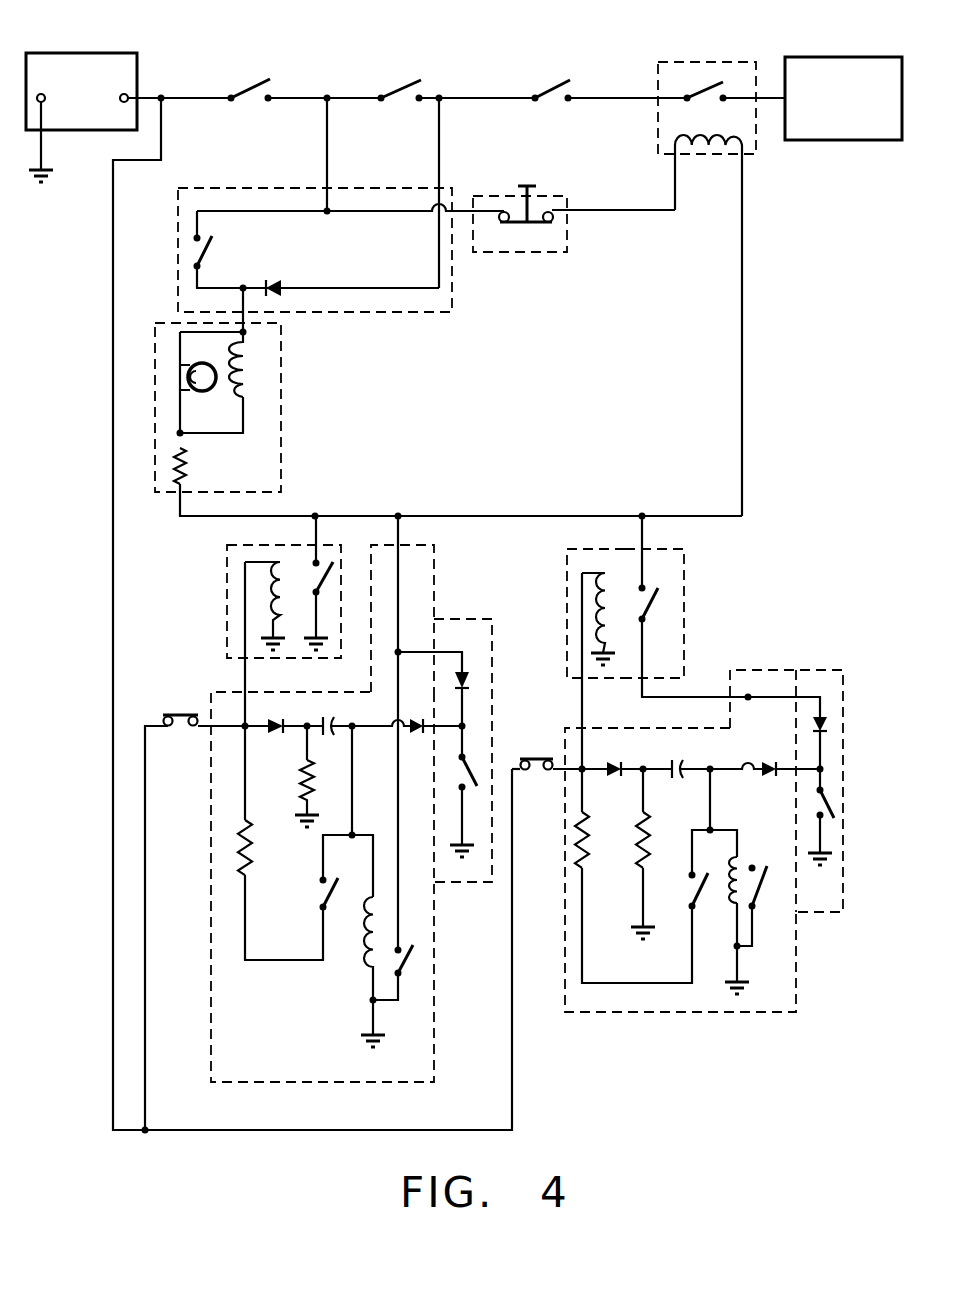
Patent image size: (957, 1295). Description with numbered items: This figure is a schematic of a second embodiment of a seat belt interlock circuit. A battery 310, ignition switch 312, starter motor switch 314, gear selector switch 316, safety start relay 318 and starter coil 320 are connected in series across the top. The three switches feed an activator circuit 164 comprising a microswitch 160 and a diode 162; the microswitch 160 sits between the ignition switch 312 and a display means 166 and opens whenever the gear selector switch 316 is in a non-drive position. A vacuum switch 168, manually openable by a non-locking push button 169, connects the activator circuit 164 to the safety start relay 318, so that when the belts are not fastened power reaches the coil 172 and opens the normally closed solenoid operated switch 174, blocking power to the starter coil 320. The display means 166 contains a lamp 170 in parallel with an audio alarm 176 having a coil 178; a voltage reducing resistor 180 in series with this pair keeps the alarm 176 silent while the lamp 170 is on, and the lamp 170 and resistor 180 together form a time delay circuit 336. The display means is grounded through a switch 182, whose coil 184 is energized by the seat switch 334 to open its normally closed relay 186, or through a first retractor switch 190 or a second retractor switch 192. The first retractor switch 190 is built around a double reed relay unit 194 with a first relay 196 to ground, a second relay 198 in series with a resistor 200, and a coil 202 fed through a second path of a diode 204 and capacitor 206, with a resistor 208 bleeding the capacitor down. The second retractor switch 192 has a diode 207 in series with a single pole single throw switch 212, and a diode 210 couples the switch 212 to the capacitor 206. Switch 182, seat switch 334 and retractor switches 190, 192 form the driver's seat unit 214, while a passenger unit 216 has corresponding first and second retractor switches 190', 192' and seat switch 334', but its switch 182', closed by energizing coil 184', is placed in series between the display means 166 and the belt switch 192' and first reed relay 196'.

The battery 310 is at (135, 80).
The ignition switch 312 is at (258, 78).
The starter motor switch 314 is at (398, 88).
The gear selector switch 316 is at (552, 85).
The safety start relay 318 is at (737, 62).
The solenoid operated switch 174 is at (703, 88).
The coil 172 is at (710, 147).
The starter coil 320 is at (832, 57).
The vacuum switch 168 is at (570, 236).
The non-locking push button 169 is at (530, 185).
The activator circuit 164 is at (455, 300).
The microswitch 160 is at (212, 252).
The diode 162 is at (273, 285).
The display means 166 is at (283, 360).
The lamp 170 is at (185, 368).
The audio alarm 176 is at (251, 397).
The coil 178 is at (228, 396).
The time delay circuit 336 is at (172, 414).
The voltage reducing resistor 180 is at (190, 453).
The switch 182 is at (248, 593).
The coil 184 is at (232, 606).
The relay 186 is at (340, 572).
The seat unit 214 is at (444, 565).
The first retractor switch 190 is at (293, 887).
The second retractor switch 192 is at (497, 750).
The diode 207 is at (467, 670).
The single pole - single throw switch 212 is at (480, 785).
The seat switch 334 is at (165, 701).
The diode 204 is at (275, 735).
The capacitor 206 is at (332, 725).
The diode 210 is at (417, 735).
The resistor 208 is at (300, 770).
The resistor 200 is at (240, 840).
The second relay 198 is at (323, 898).
The double reed relay unit 194 is at (318, 916).
The coil 202 is at (365, 943).
The first relay 196 is at (424, 996).
The switch 182' is at (556, 613).
The unit 216 is at (688, 559).
The coil 184' is at (563, 619).
The second retractor switch 192' is at (789, 755).
The first retractor switch 190' is at (680, 900).
The seat switch 334' is at (533, 744).
The first reed relay 196' is at (778, 887).